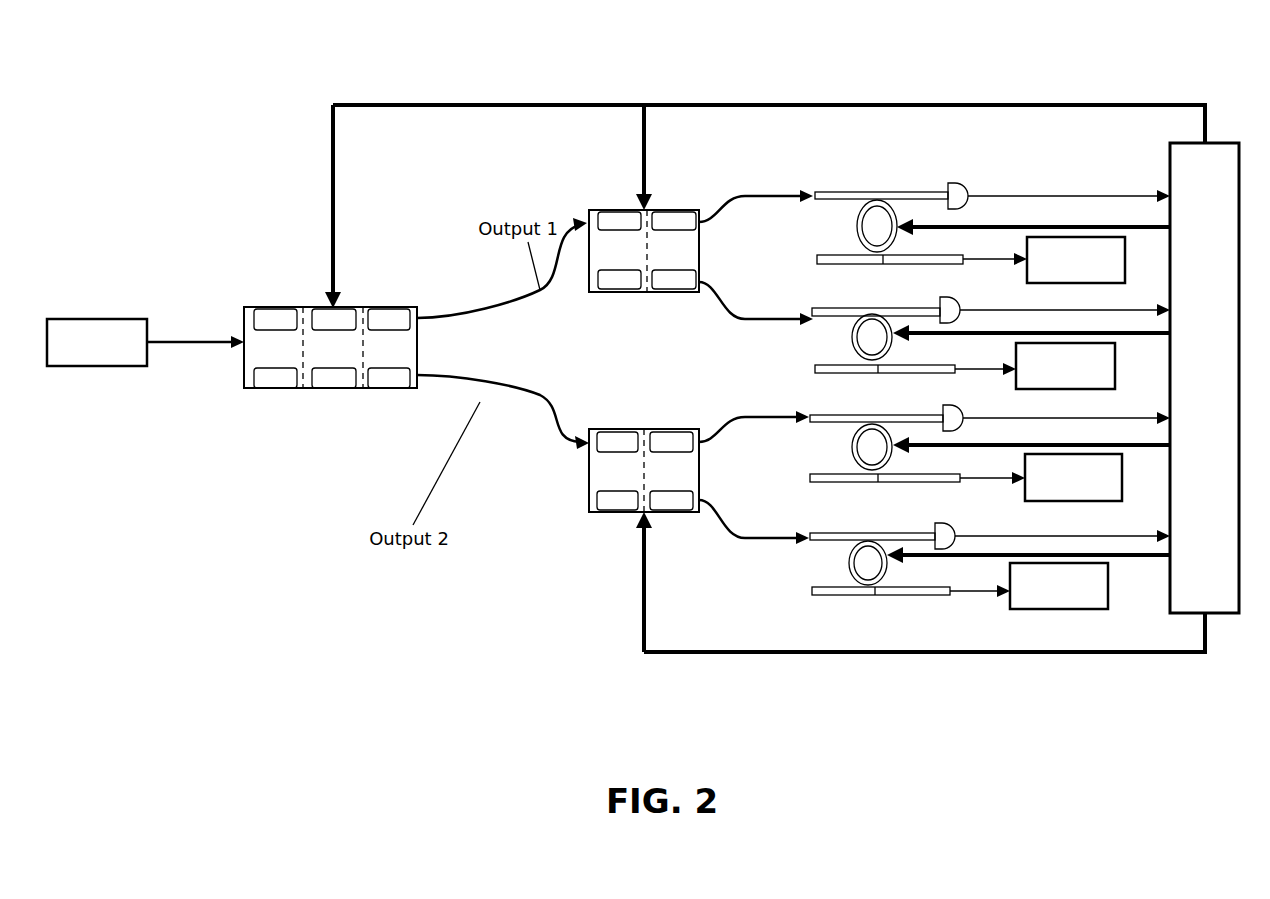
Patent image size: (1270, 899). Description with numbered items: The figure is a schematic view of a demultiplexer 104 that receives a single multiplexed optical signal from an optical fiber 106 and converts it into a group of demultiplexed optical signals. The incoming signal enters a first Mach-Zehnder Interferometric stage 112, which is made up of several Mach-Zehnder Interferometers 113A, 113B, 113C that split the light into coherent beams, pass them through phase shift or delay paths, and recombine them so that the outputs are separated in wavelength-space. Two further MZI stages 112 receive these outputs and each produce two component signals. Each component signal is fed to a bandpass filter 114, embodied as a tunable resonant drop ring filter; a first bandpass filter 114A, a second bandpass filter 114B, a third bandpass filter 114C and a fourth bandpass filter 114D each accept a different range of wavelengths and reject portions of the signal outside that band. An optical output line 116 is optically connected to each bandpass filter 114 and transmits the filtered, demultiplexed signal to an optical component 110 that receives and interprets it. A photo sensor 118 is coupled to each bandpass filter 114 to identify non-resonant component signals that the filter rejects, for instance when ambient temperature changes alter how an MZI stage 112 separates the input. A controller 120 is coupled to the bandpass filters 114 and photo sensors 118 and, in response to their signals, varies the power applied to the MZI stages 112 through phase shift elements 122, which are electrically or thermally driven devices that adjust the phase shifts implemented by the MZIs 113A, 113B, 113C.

The demultiplexer 104 is at (712, 88).
The optical fiber 106 is at (145, 342).
The optical component 110 is at (1067, 423).
The Mach-Zehnder Interferometric stage 112 is at (256, 288).
The Mach-Zehnder Interferometer 113A is at (266, 353).
The Mach-Zehnder Interferometer 113B is at (313, 353).
The Mach-Zehnder Interferometer 113C is at (410, 350).
The bandpass filter 114 is at (924, 168).
The first bandpass filter 114A is at (876, 204).
The second bandpass filter 114B is at (868, 322).
The third bandpass filter 114C is at (866, 430).
The fourth bandpass filter 114D is at (861, 543).
The optical output line 116 is at (826, 257).
The photo sensor 118 is at (963, 185).
The controller 120 is at (1190, 382).
The phase shift element 122 is at (402, 317).